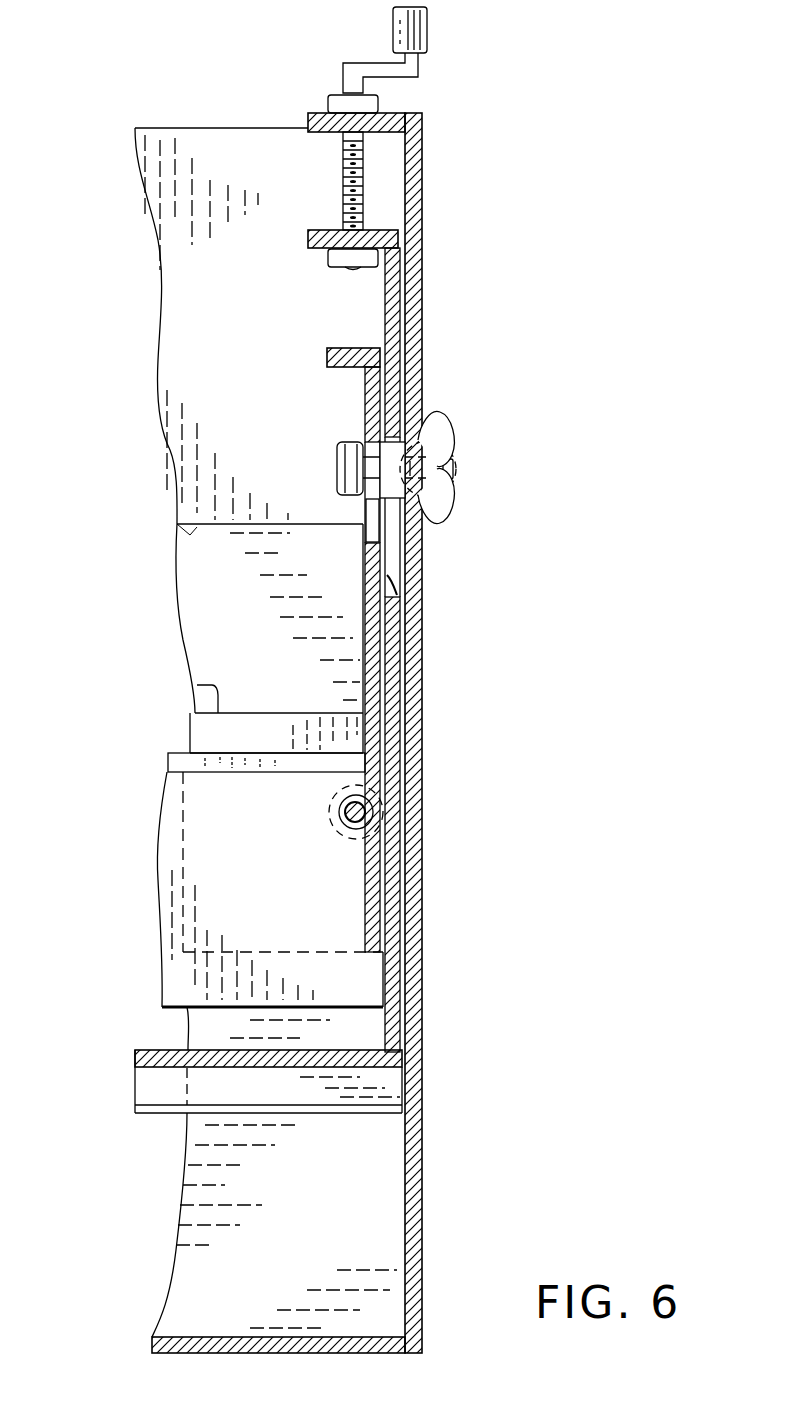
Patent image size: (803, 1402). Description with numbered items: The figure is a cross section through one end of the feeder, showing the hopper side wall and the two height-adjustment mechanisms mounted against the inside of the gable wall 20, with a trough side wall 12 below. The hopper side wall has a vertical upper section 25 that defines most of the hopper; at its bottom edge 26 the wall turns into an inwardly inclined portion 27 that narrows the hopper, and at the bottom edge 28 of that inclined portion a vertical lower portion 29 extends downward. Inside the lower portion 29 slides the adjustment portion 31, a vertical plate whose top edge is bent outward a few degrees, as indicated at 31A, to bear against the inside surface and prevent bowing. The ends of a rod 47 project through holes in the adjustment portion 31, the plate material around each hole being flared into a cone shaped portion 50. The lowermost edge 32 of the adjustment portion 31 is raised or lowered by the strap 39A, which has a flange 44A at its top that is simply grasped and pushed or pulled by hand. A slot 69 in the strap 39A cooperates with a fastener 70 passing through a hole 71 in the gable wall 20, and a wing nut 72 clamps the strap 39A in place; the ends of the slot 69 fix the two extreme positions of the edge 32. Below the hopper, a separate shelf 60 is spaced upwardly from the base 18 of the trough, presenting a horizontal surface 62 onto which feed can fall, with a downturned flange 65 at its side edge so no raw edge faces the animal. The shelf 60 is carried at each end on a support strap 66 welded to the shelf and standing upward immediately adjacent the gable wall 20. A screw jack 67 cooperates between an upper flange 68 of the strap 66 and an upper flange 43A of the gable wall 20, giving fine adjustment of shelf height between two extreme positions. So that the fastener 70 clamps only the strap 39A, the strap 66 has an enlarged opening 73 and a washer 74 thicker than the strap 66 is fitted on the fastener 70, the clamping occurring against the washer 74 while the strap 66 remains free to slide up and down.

The panel 12 is at (205, 1250).
The base of the trough 18 is at (190, 1333).
The gable wall 20 is at (430, 1185).
The vertical upper section 25 is at (175, 316).
The bottom edge 26 is at (197, 527).
The inclined portion 27 is at (196, 600).
The bottom edge 28 is at (198, 686).
The vertical lower portion 29 is at (212, 732).
The adjustment portion 31 is at (160, 820).
The outwardly bent top edge 31A is at (170, 757).
The lowermost edge 32 is at (150, 1006).
The strap 39A is at (362, 623).
The upper flange 43A is at (322, 133).
The flange 44A is at (340, 348).
The rod 47 is at (347, 815).
The cone shaped portion 50 is at (348, 840).
The shelf 60 is at (122, 1076).
The horizontal surface 62 is at (160, 1050).
The downturned flange 65 is at (163, 1098).
The support strap 66 is at (375, 902).
The screw jack 67 is at (432, 78).
The upper flange 68 is at (320, 232).
The slot 69 is at (369, 545).
The fastener 70 is at (462, 451).
The hole 71 is at (423, 437).
The wing nut 72 is at (443, 503).
The enlarged opening 73 is at (395, 590).
The washer 74 is at (380, 490).